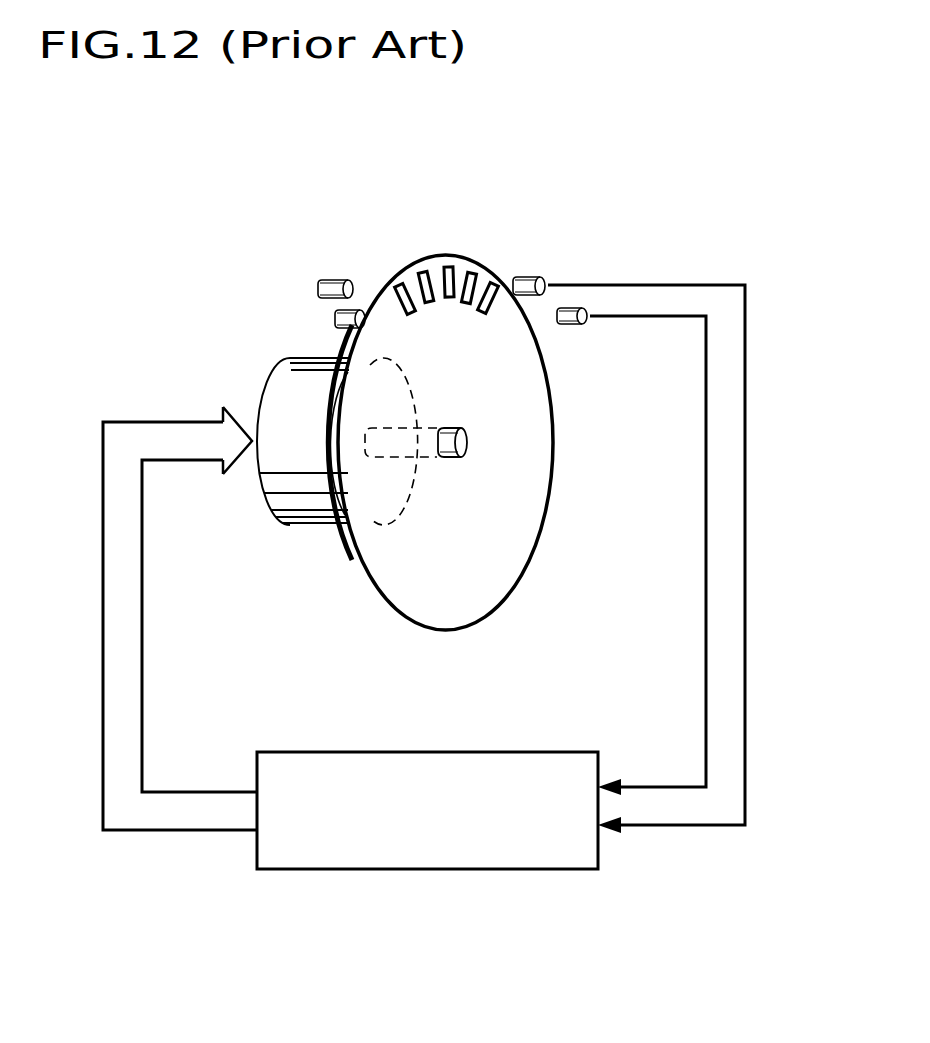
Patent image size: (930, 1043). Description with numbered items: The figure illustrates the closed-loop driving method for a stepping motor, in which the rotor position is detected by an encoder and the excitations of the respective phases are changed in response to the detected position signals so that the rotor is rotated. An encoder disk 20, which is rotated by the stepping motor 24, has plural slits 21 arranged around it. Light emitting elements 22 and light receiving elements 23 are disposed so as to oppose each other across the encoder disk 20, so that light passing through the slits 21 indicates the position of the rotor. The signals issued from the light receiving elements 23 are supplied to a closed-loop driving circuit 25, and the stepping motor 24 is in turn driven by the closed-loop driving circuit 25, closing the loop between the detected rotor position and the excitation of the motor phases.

The encoder disk 20 is at (510, 568).
The slits 21 is at (457, 263).
The light emitting elements 22 is at (335, 319).
The light receiving elements 23 is at (568, 308).
The stepping motor 24 is at (285, 498).
The closed-loop driving circuit 25 is at (462, 751).